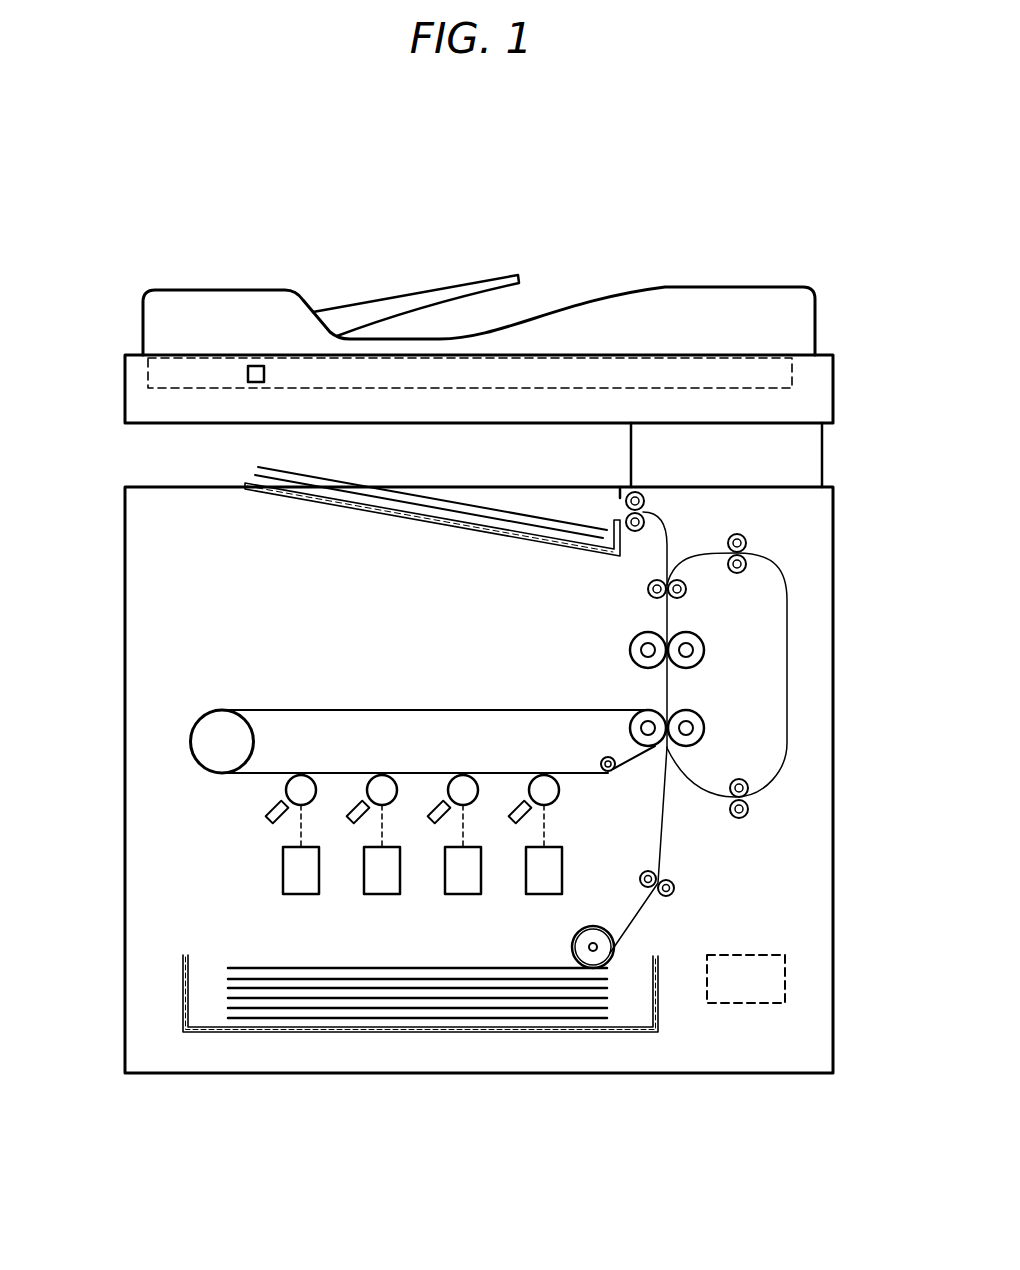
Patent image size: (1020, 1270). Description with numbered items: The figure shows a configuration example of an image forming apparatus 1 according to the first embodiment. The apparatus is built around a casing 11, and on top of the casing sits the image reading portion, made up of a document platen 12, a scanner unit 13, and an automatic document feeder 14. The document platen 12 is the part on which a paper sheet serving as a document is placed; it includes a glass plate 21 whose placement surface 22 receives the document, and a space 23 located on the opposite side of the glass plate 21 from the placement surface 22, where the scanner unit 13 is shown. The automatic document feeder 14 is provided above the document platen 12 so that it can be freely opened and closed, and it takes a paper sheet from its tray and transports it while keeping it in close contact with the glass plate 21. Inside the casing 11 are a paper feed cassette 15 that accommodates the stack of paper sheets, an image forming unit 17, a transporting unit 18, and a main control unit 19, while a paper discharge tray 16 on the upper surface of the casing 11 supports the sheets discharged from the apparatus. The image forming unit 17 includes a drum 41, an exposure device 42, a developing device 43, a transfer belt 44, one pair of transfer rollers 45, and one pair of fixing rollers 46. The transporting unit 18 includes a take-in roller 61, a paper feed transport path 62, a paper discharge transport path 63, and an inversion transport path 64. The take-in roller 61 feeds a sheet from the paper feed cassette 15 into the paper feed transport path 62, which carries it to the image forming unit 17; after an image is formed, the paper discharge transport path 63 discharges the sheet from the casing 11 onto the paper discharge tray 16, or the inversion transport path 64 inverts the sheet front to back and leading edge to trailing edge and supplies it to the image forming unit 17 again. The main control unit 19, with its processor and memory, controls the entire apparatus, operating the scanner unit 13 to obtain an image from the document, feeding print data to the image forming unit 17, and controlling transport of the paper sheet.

The image forming apparatus 1 is at (504, 175).
The casing 11 is at (125, 562).
The document platen 12 is at (125, 392).
The scanner unit 13 is at (256, 384).
The automatic document feeder 14 is at (233, 296).
The paper feed cassette 15 is at (183, 985).
The paper discharge tray 16 is at (331, 500).
The image forming unit 17 is at (420, 691).
The transporting unit 18 is at (606, 619).
The main control unit 19 is at (745, 1005).
The glass plate 21 is at (720, 358).
The placement surface 22 is at (660, 355).
The space 23 is at (780, 372).
The drum 41 is at (301, 775).
The exposure device 42 is at (301, 896).
The developing device 43 is at (269, 820).
The transfer belt 44 is at (536, 710).
The pair of transfer rollers 45 is at (698, 712).
The pair of fixing rollers 46 is at (698, 633).
The take-in roller 61 is at (593, 926).
The paper feed transport path 62 is at (663, 832).
The paper discharge transport path 63 is at (667, 540).
The inversion transport path 64 is at (786, 683).